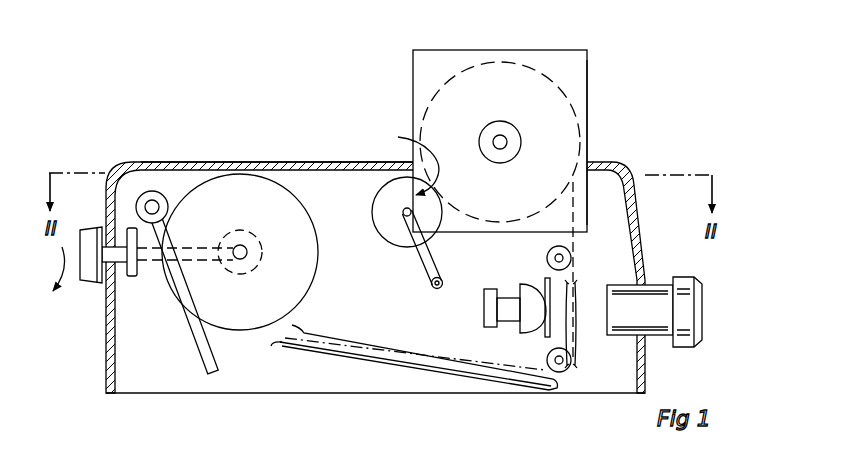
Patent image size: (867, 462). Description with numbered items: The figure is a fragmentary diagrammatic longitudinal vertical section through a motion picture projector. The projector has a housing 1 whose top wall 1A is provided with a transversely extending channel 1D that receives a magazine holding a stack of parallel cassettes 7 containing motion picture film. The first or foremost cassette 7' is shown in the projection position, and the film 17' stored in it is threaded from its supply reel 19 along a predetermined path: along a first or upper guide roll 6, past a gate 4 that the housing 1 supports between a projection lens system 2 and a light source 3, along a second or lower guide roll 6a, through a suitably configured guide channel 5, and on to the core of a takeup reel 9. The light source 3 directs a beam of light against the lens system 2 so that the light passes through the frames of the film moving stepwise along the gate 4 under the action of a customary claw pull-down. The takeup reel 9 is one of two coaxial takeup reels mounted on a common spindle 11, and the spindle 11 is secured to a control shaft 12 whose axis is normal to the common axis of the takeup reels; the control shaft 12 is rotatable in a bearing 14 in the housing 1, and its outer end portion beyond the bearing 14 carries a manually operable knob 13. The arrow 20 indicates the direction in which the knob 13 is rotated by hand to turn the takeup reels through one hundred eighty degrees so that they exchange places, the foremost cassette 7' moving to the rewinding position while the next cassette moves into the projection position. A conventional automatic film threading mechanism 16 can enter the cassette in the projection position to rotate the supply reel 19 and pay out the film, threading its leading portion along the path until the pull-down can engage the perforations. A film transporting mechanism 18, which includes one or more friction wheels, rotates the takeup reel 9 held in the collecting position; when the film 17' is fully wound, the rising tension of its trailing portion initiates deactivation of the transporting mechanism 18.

The housing 1 is at (100, 367).
The top wall 1A is at (314, 166).
The channel 1D is at (410, 153).
The projection lens system 2 is at (692, 316).
The light source 3 is at (508, 297).
The gate 4 is at (572, 328).
The guide channel 5 is at (405, 360).
The upper guide roll 6 is at (571, 258).
The lower guide roll 6a is at (571, 365).
The cassettes 7 is at (516, 133).
The foremost cassette 7' is at (603, 142).
The takeup reel 9 is at (313, 250).
The spindle 11 is at (243, 258).
The control shaft 12 is at (150, 253).
The knob 13 is at (90, 270).
The bearing 14 is at (121, 262).
The automatic film threading mechanism 16 is at (423, 253).
The film 17' is at (600, 272).
The film transporting mechanism 18 is at (203, 340).
The supply reel 19 is at (563, 90).
The arrow 20 is at (59, 272).